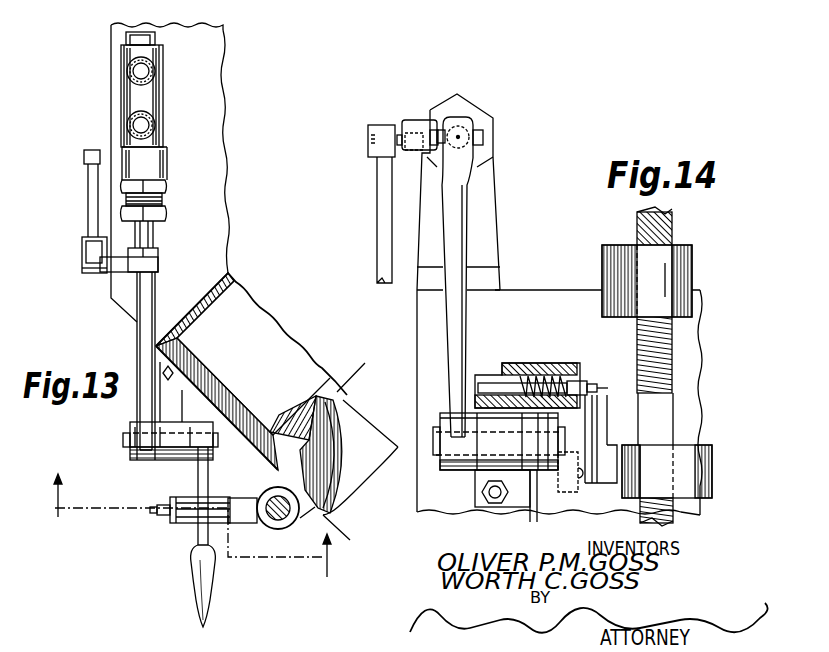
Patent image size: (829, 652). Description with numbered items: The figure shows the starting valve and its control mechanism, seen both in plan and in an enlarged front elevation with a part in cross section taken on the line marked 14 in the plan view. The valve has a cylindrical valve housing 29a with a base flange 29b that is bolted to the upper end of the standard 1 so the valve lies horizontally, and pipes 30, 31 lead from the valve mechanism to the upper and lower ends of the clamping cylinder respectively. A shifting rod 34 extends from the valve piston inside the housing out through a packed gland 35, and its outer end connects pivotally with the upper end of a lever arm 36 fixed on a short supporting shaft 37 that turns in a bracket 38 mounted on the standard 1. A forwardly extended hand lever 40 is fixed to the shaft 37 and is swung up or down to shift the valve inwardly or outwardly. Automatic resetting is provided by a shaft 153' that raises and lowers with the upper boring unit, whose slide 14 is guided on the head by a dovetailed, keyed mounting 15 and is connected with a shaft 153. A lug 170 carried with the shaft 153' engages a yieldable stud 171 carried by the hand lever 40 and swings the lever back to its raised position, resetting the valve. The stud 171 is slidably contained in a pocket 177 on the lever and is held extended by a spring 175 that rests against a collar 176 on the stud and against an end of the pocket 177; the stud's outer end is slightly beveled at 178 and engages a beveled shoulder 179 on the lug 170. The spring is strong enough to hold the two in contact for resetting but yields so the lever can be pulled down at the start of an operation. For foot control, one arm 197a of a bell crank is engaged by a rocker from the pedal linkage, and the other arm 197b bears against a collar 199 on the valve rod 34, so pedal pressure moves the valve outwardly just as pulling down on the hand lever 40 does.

In FIG. 13, the standard 1 is at (262, 438).
In FIG. 13, the slide 14 is at (199, 465).
In FIG. 13, the dovetailed keyed mounting 15 is at (293, 417).
In FIG. 13, the cylindrical valve housing 29a is at (120, 100).
In FIG. 14, the base flange 29b is at (487, 190).
In FIG. 13, the pipe 30 is at (157, 122).
In FIG. 13, the pipe 31 is at (153, 70).
In FIG. 13, the shifting rod 34 is at (147, 343).
In FIG. 14, the shifting rod 34 is at (479, 254).
In FIG. 13, the packed gland 35 is at (165, 200).
In FIG. 13, the lever arm 36 is at (137, 461).
In FIG. 14, the lever arm 36 is at (460, 235).
In FIG. 13, the supporting shaft 37 is at (128, 440).
In FIG. 14, the supporting shaft 37 is at (437, 437).
In FIG. 13, the bracket 38 is at (167, 461).
In FIG. 13, the hand lever 40 is at (193, 563).
In FIG. 14, the hand lever 40 is at (534, 522).
In FIG. 14, the shaft 153 is at (672, 218).
In FIG. 13, the shaft 153' is at (283, 543).
In FIG. 14, the shaft 153' is at (686, 371).
In FIG. 13, the lug 170 is at (197, 523).
In FIG. 13, the yieldable stud 171 is at (155, 513).
In FIG. 14, the yieldable stud 171 is at (587, 383).
In FIG. 14, the spring 175 is at (543, 363).
In FIG. 14, the collar 176 is at (573, 370).
In FIG. 14, the pocket 177 is at (523, 363).
In FIG. 14, the beveled end 178 is at (595, 396).
In FIG. 14, the beveled shoulder 179 is at (605, 427).
In FIG. 13, the bell crank arm 197a is at (88, 203).
In FIG. 13, the bell crank arm 197b is at (83, 255).
In FIG. 14, the bell crank arm 197b is at (385, 205).
In FIG. 13, the collar 199 is at (127, 272).
In FIG. 14, the collar 199 is at (433, 127).